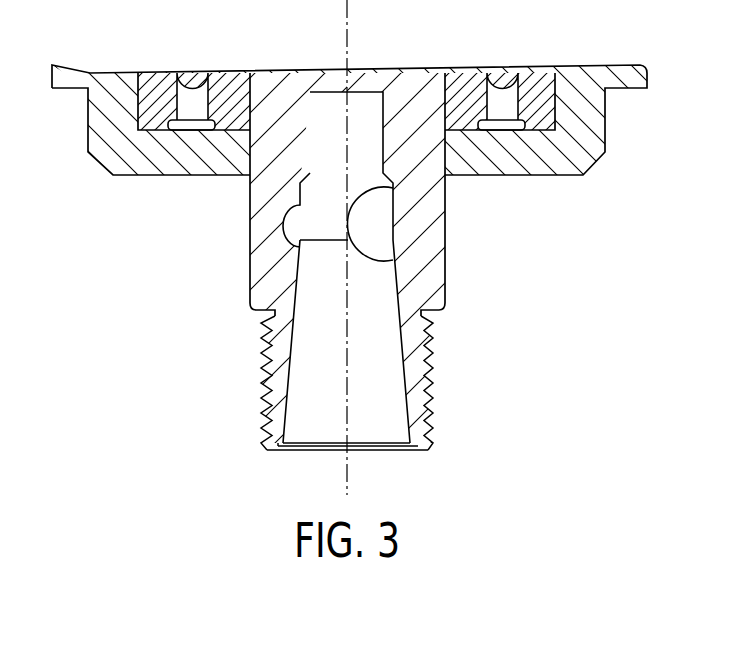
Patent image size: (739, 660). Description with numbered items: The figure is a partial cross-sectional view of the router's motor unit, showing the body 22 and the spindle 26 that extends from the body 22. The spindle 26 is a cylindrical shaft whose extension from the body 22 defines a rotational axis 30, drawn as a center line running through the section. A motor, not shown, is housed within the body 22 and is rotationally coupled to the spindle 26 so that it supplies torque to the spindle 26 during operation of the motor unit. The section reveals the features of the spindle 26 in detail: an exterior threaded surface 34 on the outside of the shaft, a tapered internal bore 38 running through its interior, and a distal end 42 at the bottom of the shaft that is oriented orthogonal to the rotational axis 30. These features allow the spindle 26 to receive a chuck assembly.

The body 22 is at (181, 176).
The spindle 26 is at (446, 222).
The rotational axis 30 is at (350, 455).
The exterior threaded surface 34 is at (433, 363).
The tapered internal bore 38 is at (310, 410).
The distal end 42 is at (278, 448).